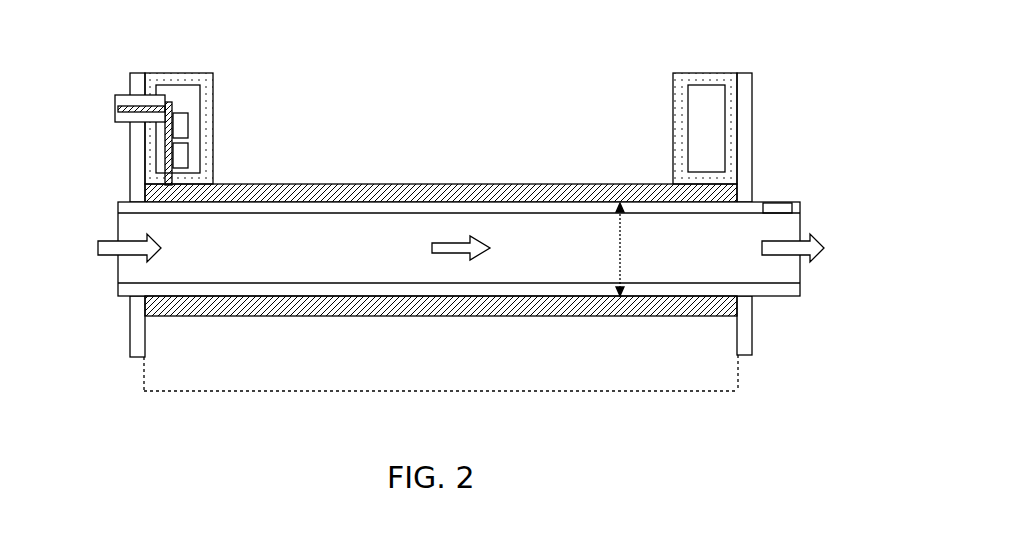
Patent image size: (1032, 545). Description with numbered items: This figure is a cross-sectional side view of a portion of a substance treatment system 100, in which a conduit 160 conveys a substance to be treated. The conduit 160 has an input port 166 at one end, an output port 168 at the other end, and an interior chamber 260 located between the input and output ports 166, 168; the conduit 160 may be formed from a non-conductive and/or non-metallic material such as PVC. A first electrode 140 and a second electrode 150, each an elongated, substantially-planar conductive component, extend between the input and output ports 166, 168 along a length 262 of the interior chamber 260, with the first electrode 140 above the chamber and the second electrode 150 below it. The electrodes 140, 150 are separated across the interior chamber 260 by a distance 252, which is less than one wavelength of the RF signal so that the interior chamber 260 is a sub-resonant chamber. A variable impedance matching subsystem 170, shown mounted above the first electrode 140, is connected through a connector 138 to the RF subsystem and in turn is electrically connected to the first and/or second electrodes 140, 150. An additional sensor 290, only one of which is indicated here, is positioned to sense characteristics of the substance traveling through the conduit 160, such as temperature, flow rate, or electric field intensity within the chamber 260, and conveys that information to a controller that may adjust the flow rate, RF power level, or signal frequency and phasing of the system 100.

The substance treatment system 100 is at (568, 84).
The connector 138 is at (118, 94).
The first electrode 140 is at (488, 184).
The second electrode 150 is at (557, 316).
The conduit 160 is at (117, 212).
The input port 166 is at (117, 267).
The output port 168 is at (800, 268).
The variable impedance matching subsystem 170 is at (187, 73).
The distance 252 is at (618, 264).
The interior chamber 260 is at (300, 264).
The length 262 is at (466, 391).
The additional sensor 290 is at (783, 215).